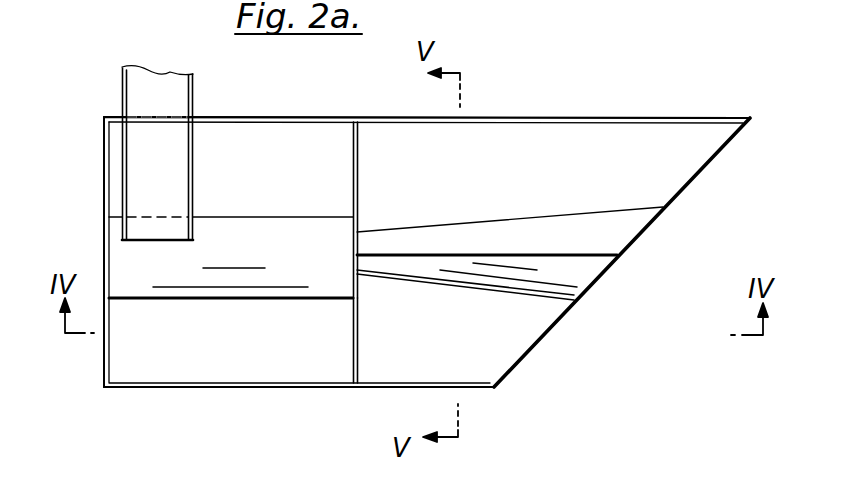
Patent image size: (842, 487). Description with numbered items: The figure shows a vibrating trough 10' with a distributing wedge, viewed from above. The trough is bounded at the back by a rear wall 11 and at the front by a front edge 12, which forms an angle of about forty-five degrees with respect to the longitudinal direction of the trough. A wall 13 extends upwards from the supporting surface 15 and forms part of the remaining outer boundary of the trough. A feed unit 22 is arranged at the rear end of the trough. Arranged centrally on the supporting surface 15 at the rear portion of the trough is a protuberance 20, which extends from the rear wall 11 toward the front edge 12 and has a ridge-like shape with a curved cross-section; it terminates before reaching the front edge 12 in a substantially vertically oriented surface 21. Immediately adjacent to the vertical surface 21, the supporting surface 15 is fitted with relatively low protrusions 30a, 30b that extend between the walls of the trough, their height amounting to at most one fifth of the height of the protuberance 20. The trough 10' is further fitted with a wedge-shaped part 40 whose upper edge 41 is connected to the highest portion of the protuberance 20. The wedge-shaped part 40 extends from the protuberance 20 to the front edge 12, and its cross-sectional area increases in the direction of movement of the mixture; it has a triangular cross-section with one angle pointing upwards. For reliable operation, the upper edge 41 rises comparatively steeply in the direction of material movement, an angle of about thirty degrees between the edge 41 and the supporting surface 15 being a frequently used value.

The vibrating trough 10' is at (427, 224).
The rear wall 11 is at (104, 186).
The front edge 12 is at (555, 323).
The wall 13 is at (270, 118).
The supporting surface 15 is at (447, 313).
The protuberance 20 is at (275, 285).
The vertical surface 21 is at (360, 278).
The feed unit 22 is at (185, 102).
The protrusion 30a is at (353, 140).
The protrusion 30b is at (348, 347).
The wedge-shaped part 40 is at (535, 224).
The upper edge 41 is at (465, 253).